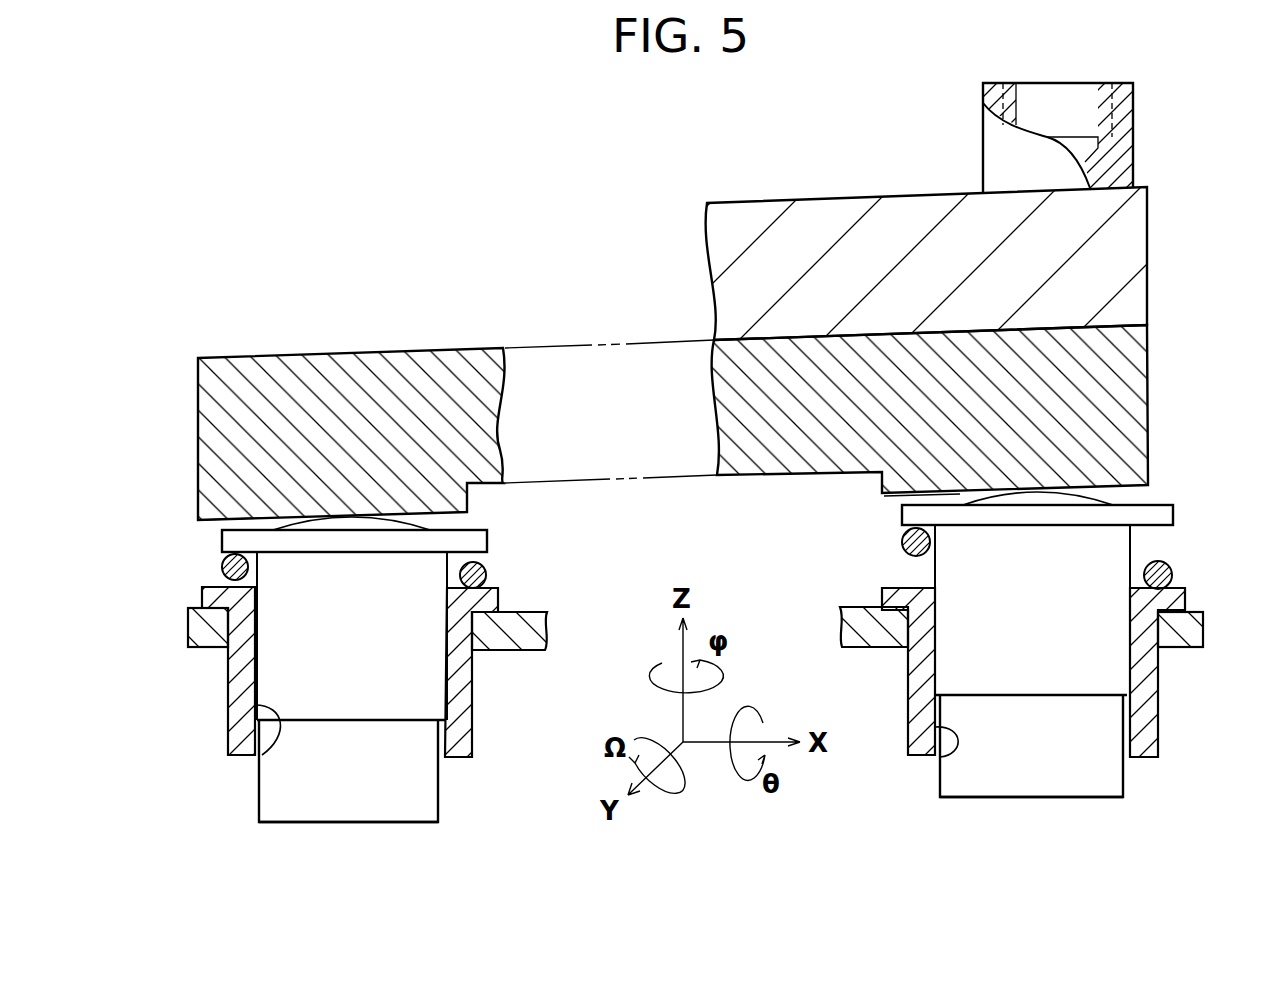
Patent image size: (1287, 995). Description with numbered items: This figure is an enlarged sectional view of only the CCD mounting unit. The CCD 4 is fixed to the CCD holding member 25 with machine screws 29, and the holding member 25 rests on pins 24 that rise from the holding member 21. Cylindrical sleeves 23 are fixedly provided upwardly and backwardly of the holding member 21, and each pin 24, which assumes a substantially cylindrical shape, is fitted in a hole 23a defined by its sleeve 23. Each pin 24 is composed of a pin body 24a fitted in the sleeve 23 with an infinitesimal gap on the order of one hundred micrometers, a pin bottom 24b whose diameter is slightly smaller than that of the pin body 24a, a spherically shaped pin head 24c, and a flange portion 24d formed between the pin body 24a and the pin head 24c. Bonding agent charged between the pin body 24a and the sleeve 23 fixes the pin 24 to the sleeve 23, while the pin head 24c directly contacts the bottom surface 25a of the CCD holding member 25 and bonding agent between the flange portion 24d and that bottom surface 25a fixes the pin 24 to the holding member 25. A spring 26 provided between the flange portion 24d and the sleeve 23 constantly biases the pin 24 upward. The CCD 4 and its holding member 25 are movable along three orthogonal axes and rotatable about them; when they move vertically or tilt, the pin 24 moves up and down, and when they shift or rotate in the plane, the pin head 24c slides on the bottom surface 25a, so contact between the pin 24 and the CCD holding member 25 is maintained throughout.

The CCD 4 is at (1147, 215).
The machine screw 29 is at (1133, 133).
The CCD holding member 25 is at (1148, 373).
The bottom surface of CCD holding member 25a is at (203, 521).
The holding member 21 is at (190, 628).
The cylindrical sleeve 23 is at (1160, 715).
The hole 23a is at (258, 755).
The pin 24 is at (366, 808).
The pin body 24a is at (430, 685).
The pin bottom 24b is at (487, 540).
The pin head 24c is at (430, 530).
The flange portion 24d is at (1165, 513).
The spring 26 is at (487, 580).